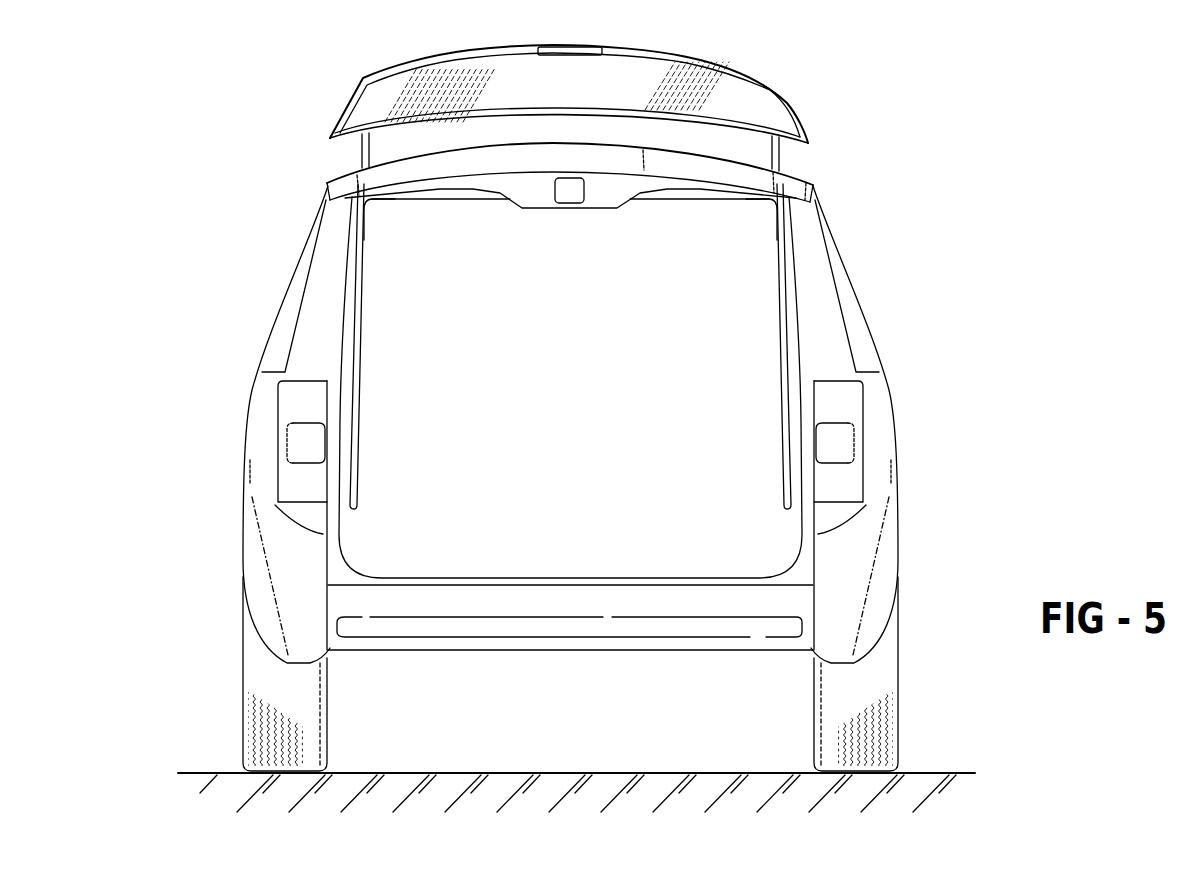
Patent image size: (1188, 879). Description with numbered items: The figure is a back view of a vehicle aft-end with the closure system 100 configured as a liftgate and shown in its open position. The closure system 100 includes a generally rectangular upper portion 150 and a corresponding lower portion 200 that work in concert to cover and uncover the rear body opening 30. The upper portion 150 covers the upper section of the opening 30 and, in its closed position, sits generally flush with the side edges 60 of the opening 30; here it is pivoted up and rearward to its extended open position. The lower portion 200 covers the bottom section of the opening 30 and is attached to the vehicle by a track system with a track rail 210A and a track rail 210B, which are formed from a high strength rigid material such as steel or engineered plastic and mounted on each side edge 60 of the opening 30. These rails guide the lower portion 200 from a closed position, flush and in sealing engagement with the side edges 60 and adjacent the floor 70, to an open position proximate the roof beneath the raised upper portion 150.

The opening 30 is at (590, 298).
The side edges 60 is at (320, 287).
The floor 70 is at (530, 580).
The closure system 100 is at (845, 147).
The upper portion 150 is at (732, 60).
The lower portion 200 is at (803, 186).
The track rail 210A is at (358, 452).
The track rail 210B is at (780, 446).